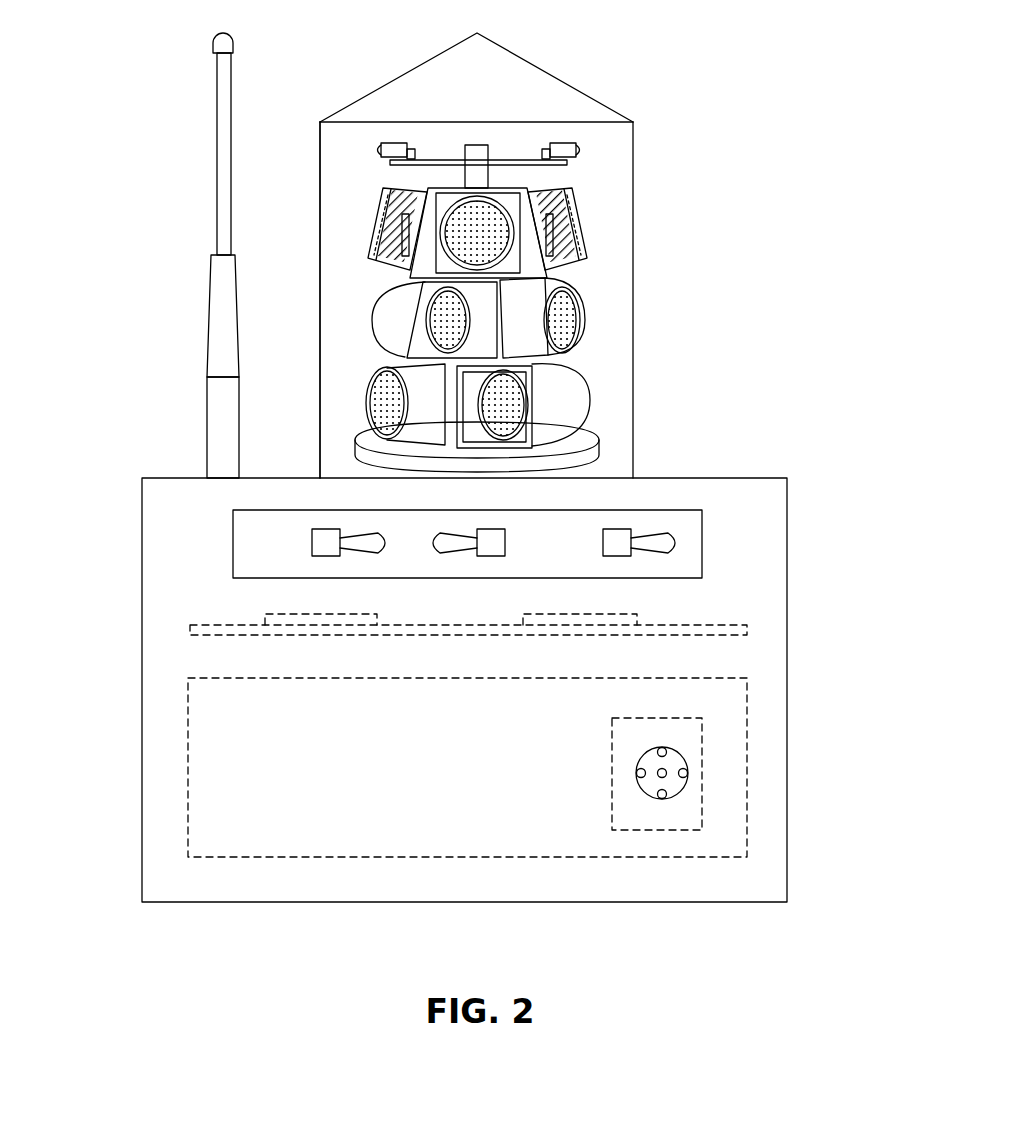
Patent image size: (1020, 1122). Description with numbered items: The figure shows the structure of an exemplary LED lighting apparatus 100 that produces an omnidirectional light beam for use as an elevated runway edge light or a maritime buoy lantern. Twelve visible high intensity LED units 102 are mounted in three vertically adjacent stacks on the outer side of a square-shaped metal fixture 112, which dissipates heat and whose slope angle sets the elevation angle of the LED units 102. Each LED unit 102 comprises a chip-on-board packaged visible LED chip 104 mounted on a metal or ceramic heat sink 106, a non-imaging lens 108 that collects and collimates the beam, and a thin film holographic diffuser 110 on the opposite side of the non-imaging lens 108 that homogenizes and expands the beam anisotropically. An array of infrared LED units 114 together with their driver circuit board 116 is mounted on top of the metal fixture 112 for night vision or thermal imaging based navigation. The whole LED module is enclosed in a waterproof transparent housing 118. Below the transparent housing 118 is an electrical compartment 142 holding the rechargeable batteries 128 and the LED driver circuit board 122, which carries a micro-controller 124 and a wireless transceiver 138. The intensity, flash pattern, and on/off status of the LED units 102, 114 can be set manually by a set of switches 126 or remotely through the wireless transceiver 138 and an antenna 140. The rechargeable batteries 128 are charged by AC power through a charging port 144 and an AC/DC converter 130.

The LED lighting apparatus 100 is at (853, 148).
The visible high intensity LED unit 102 is at (568, 393).
The high intensity visible LED chip 104 is at (552, 265).
The heat sink 106 is at (558, 270).
The non-imaging lens 108 is at (572, 237).
The thin film holographic diffuser 110 is at (582, 212).
The square-shaped metal fixture 112 is at (403, 357).
The infrared LED unit 114 is at (580, 147).
The driver circuit board 116 is at (507, 160).
The waterproof transparent housing 118 is at (548, 73).
The LED driver circuit board 122 is at (748, 628).
The micro-controller 124 is at (637, 620).
The switches 126 is at (680, 540).
The rechargeable batteries 128 is at (188, 742).
The AC/DC converter 130 is at (612, 812).
The wireless transceiver 138 is at (265, 620).
The antenna 140 is at (213, 298).
The electrical compartment 142 is at (787, 797).
The charging port 144 is at (635, 773).